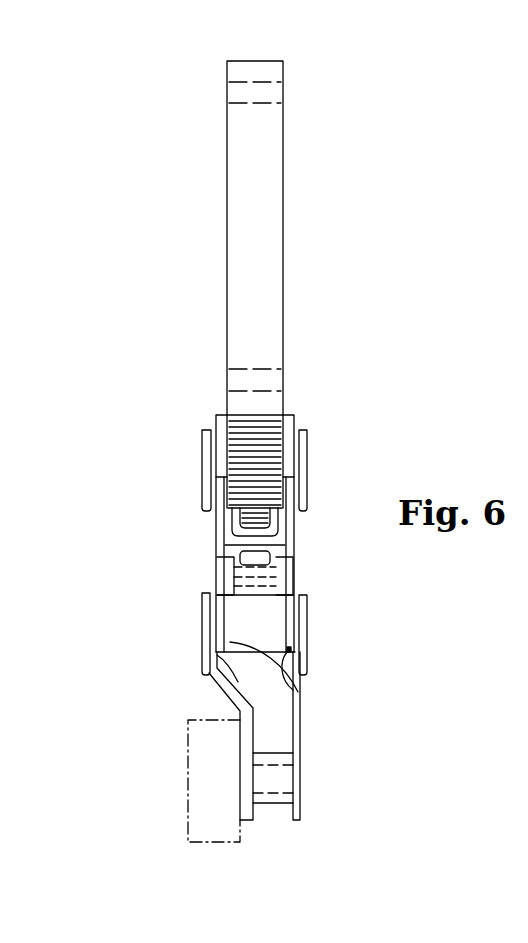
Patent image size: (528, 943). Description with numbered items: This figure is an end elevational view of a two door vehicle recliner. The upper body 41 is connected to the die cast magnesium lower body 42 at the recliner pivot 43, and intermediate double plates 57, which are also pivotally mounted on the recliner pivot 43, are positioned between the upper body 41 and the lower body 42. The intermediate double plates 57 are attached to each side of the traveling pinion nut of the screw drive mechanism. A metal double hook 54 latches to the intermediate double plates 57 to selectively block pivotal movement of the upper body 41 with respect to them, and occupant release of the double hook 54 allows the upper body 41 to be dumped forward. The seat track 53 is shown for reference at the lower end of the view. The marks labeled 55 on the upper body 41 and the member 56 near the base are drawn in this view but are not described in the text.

The upper body 41 is at (227, 62).
The fastening marks 55 is at (278, 93).
The lower body 42 is at (218, 416).
The recliner pivot 43 is at (203, 465).
The metal double hook 54 is at (218, 596).
The intermediate double plates 57 is at (298, 690).
The cross member 56 is at (283, 780).
The seat track 53 is at (210, 720).